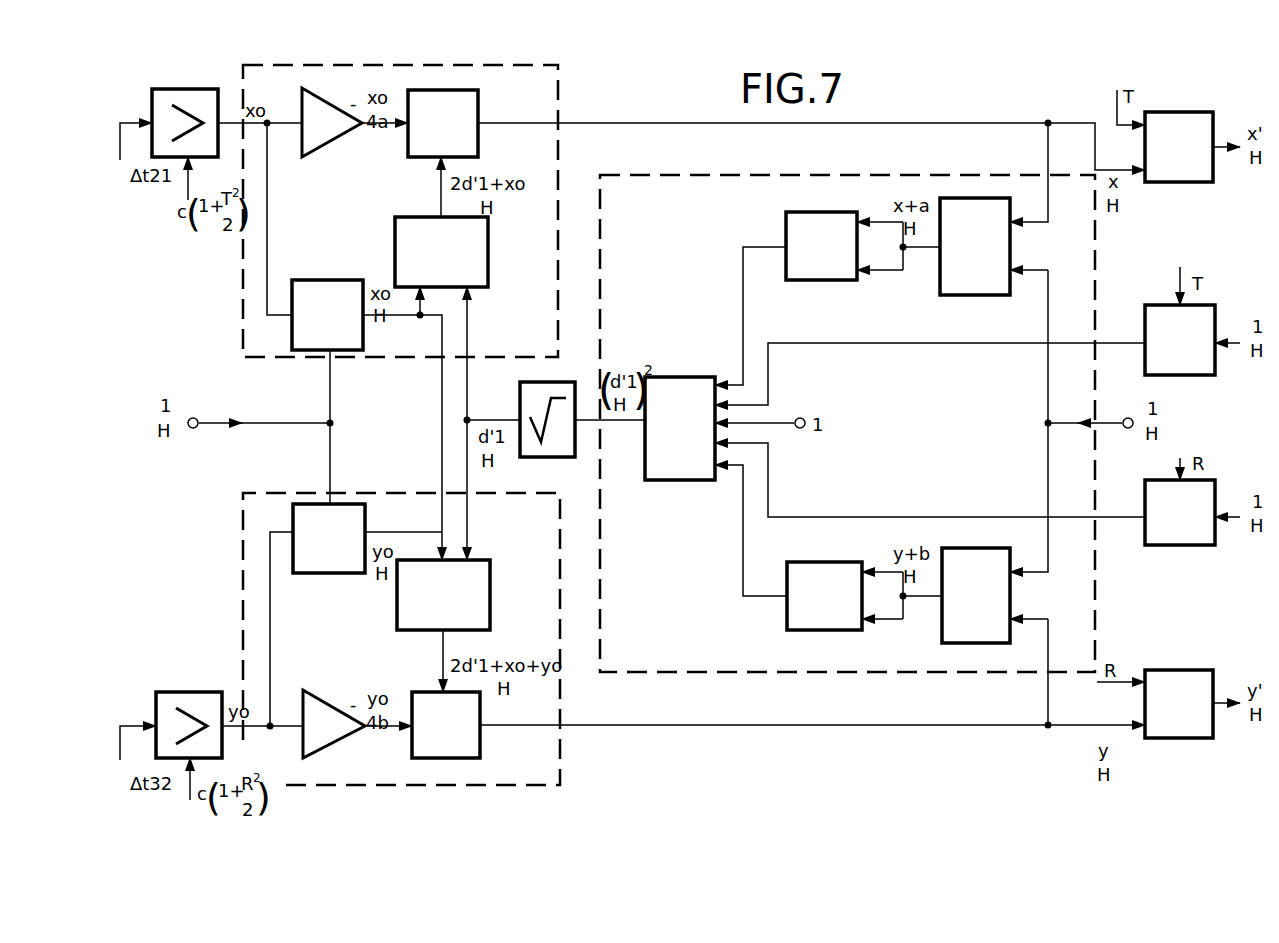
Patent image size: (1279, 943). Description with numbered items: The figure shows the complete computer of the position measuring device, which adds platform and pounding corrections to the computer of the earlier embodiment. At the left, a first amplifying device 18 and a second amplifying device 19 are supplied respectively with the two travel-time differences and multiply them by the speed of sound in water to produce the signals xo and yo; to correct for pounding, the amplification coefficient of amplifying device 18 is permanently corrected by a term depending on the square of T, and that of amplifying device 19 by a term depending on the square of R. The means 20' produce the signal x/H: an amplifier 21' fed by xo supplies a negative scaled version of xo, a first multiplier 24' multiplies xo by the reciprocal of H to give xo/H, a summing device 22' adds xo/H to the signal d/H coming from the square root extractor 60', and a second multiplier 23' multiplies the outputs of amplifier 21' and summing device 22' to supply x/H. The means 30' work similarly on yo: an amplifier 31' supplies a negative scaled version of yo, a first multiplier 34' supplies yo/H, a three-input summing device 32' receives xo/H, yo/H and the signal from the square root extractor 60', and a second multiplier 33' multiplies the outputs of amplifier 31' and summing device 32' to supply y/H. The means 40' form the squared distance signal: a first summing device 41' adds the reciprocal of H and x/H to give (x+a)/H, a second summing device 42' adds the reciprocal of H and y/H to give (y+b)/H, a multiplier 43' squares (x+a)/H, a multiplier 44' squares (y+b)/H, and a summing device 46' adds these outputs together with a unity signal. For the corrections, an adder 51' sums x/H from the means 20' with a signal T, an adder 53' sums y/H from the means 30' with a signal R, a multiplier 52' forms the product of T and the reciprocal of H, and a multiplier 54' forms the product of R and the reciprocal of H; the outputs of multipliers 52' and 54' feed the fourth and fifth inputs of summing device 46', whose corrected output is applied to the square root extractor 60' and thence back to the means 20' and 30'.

The first amplifying device 18 is at (172, 125).
The second amplifying device 19 is at (178, 705).
The means supplying the signal x/H 20' is at (366, 211).
The amplifier 21' is at (332, 139).
The summing device 22' is at (476, 252).
The second multiplier 23' is at (481, 117).
The first multiplier 24' is at (326, 290).
The means supplying the signal y/H 30' is at (370, 635).
The amplifier 31' is at (334, 705).
The summing device 32' is at (412, 595).
The second multiplier 33' is at (478, 736).
The first multiplier 34' is at (321, 560).
The means supplying the signal (d1/H)² 40' is at (847, 450).
The first summing device 41' is at (992, 264).
The second summing device 42' is at (951, 609).
The multiplier 43' is at (821, 267).
The multiplier 44' is at (802, 609).
The summing device 46' is at (680, 404).
The adder 51' is at (1185, 130).
The multiplier 52' is at (1189, 361).
The adder 53' is at (1179, 733).
The multiplier 54' is at (1193, 540).
The square root extractor 60' is at (528, 407).